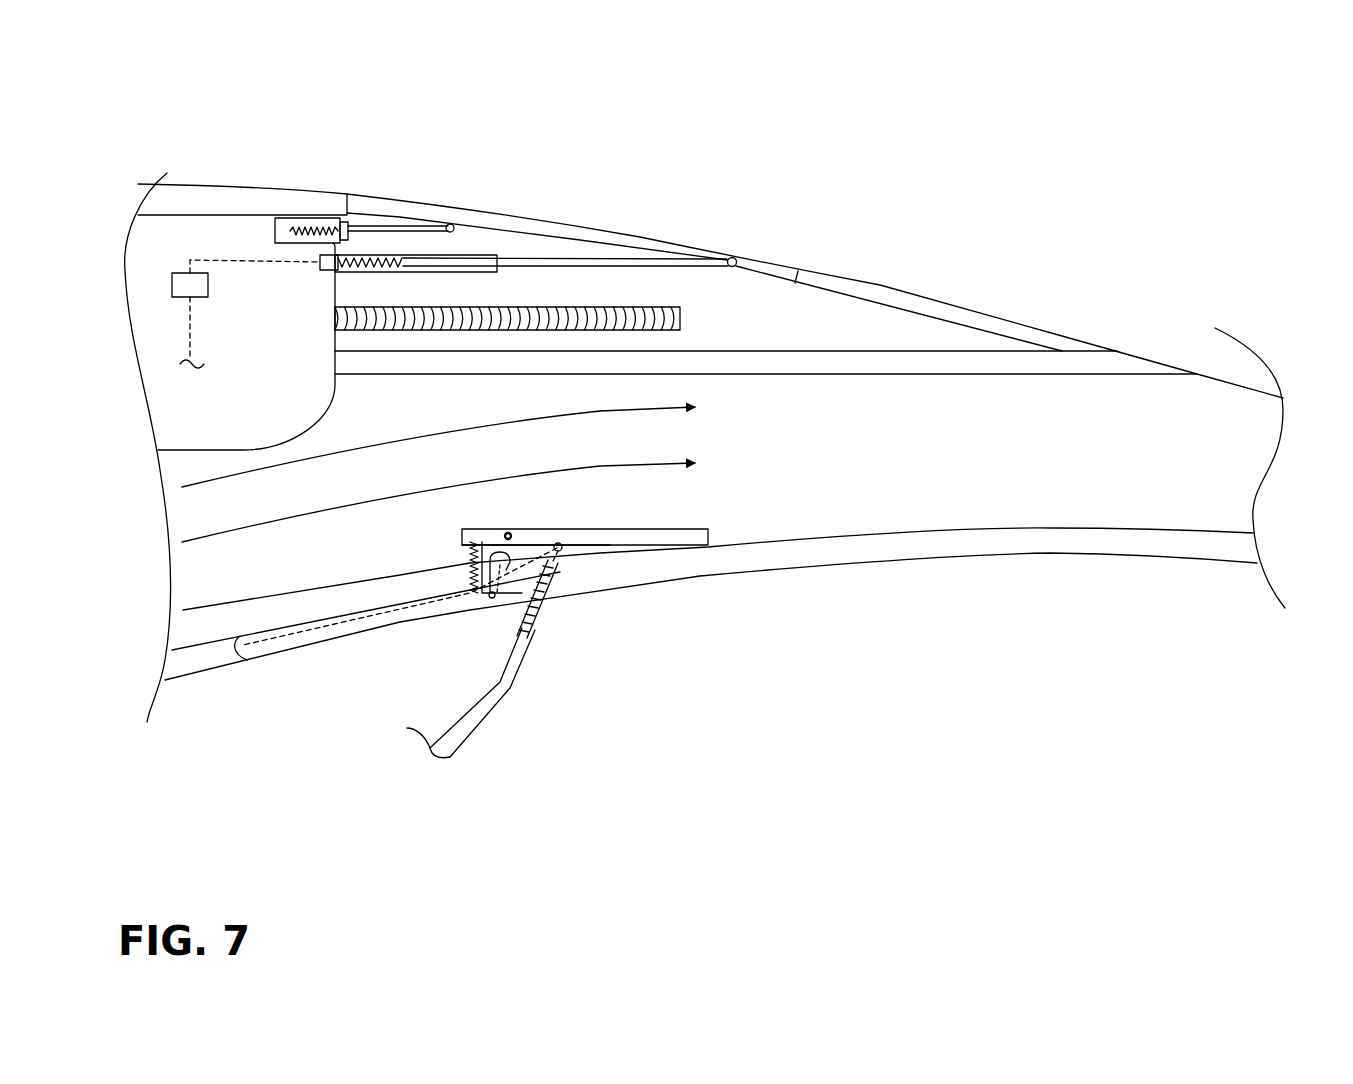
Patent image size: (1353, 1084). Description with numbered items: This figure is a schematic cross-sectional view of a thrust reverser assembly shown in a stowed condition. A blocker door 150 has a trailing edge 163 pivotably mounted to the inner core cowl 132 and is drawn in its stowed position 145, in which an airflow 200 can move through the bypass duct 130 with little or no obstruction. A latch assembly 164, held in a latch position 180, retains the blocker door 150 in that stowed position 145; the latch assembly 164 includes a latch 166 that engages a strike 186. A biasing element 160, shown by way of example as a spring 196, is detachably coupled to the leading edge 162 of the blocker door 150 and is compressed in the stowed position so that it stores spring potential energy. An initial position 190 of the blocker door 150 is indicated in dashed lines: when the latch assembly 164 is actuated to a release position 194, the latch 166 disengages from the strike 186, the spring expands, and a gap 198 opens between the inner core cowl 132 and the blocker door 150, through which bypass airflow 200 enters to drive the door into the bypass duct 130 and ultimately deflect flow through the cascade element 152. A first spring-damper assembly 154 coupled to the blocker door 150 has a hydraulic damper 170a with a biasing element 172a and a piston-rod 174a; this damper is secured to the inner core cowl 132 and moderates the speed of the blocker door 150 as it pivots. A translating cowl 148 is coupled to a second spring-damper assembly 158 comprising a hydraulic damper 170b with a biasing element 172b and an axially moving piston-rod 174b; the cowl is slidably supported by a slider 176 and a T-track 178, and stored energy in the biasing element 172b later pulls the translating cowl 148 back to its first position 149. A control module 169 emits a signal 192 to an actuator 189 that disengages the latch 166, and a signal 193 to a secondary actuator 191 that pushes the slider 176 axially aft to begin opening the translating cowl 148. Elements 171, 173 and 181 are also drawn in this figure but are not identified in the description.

The bypass duct 130 is at (1002, 452).
The inner core cowl 132 is at (930, 558).
The stowed position 145 is at (562, 550).
The translating cowl 148 is at (845, 288).
The first position 149 is at (704, 232).
The blocker door 150 is at (628, 528).
The cascade element 152 is at (683, 320).
The first spring-damper assembly 154 is at (548, 718).
The second spring-damper assembly 158 is at (360, 184).
The biasing element 160 is at (465, 560).
The leading edge 162 is at (462, 537).
The trailing edge 163 is at (712, 536).
The latch assembly 164 is at (520, 545).
The latch 166 is at (462, 592).
The control module 169 is at (178, 272).
The hydraulic damper 170a is at (537, 607).
The hydraulic damper 170b is at (307, 228).
The linkage 171 is at (548, 570).
The biasing element 172a is at (547, 590).
The biasing element 172b is at (297, 228).
The actuator rod 173 is at (528, 636).
The piston-rod 174a is at (578, 543).
The piston-rod 174b is at (385, 226).
The slider 176 is at (577, 262).
The T-track 178 is at (468, 257).
The latch position 180 is at (497, 688).
The cam 181 is at (498, 590).
The strike 186 is at (510, 532).
The actuator 189 is at (485, 596).
The initial position 190 is at (715, 465).
The secondary actuator 191 is at (324, 270).
The signal 192 is at (288, 634).
The signal 193 is at (233, 260).
The release position 194 is at (498, 530).
The spring 196 is at (465, 553).
The gap 198 is at (465, 545).
The airflow 200 is at (308, 585).